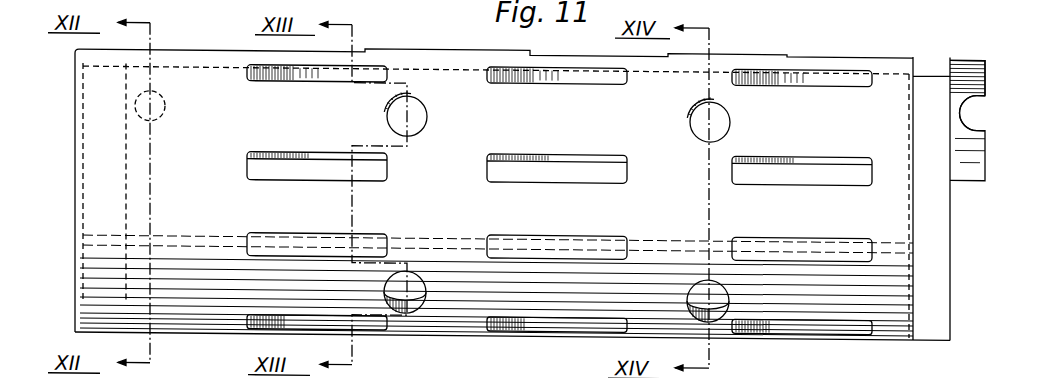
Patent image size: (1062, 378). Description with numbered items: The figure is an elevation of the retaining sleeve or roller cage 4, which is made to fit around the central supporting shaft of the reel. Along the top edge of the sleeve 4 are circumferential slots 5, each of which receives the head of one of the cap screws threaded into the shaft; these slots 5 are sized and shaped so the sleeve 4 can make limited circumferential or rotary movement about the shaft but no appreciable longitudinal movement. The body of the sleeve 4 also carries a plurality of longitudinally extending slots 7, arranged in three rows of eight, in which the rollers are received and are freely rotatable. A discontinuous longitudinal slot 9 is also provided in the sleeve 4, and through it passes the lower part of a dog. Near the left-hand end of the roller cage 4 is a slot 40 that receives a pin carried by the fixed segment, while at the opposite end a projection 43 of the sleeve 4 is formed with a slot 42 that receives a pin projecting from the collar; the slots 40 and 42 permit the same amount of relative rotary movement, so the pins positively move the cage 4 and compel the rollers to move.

The retaining sleeve or roller cage 4 is at (95, 202).
The circumferential slots 5 is at (408, 88).
The longitudinally extending slots 7 is at (307, 163).
The discontinuous longitudinal slot 9 is at (258, 62).
The slot 40 is at (165, 106).
The slot 42 is at (968, 112).
The projection 43 is at (985, 75).